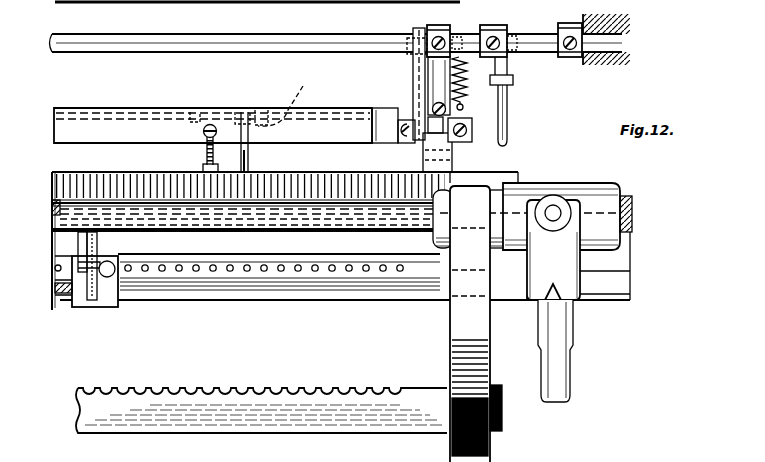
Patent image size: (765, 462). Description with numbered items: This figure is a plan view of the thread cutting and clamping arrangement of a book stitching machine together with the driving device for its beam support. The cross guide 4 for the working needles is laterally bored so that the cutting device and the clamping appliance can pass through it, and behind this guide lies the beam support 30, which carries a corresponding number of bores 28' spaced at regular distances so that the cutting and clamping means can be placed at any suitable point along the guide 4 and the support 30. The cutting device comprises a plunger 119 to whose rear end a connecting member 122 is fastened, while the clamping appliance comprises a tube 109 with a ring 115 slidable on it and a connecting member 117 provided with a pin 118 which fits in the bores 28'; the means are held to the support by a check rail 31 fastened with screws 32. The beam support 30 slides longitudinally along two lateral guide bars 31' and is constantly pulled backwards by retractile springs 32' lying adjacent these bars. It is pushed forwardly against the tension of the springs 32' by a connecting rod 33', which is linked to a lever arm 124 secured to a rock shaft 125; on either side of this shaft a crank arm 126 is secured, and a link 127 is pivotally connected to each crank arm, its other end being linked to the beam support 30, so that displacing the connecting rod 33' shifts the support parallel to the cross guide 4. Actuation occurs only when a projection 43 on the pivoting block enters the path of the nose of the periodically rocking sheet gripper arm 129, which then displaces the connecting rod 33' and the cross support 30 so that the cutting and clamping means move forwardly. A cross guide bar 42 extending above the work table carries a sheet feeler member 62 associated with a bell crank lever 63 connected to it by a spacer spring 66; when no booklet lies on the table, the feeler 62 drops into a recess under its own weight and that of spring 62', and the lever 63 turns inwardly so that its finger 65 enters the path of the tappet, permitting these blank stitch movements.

The rock shaft 125 is at (328, 39).
The crank arm 126 is at (437, 25).
The lever arm 124 is at (497, 19).
The link 127 is at (413, 71).
The retractile spring 32' is at (470, 99).
The connecting rod 33' is at (516, 101).
The bore 28' is at (290, 97).
The check rail 31 is at (213, 113).
The beam support 30 is at (380, 119).
The connecting member 117 is at (200, 112).
The connecting member 122 is at (255, 112).
The plunger 119 is at (251, 164).
The screw 32 is at (187, 133).
The pin 118 is at (205, 152).
The tube 109 is at (203, 167).
The ring 115 is at (250, 166).
The cross guide 4 is at (126, 174).
The guide bar 31' is at (453, 114).
The bell crank lever 63 is at (78, 245).
The finger 65 is at (113, 257).
The spacer spring 66 is at (58, 290).
The sheet feeler member 62 is at (90, 299).
The spring 62' is at (109, 289).
The cross guide bar 42 is at (177, 305).
The sheet gripper arm 129 is at (449, 349).
The projection 43 is at (261, 425).